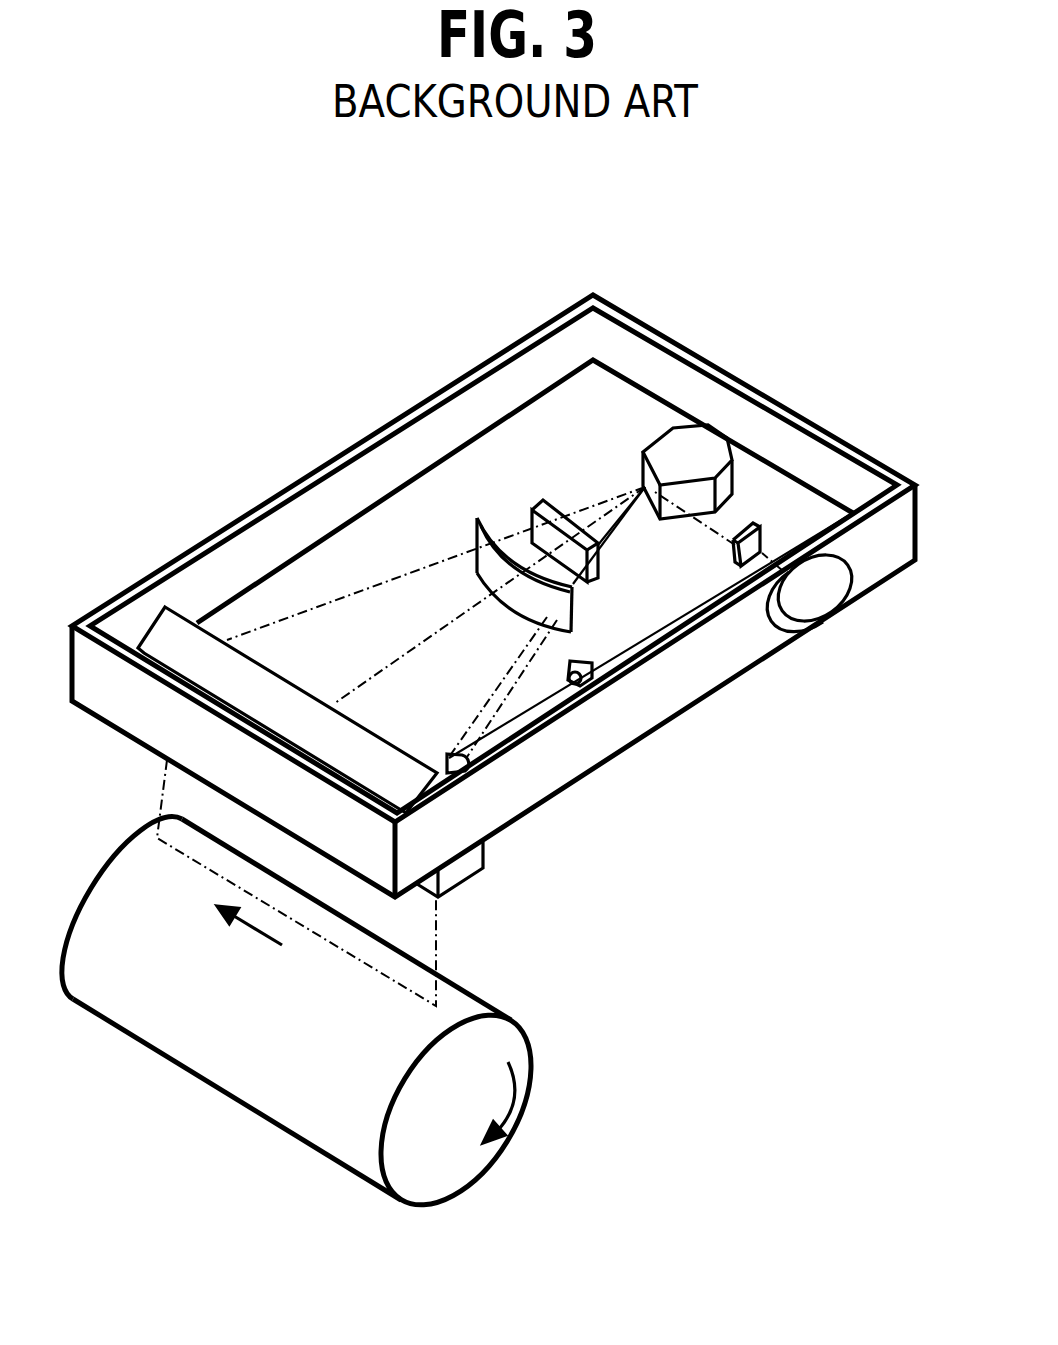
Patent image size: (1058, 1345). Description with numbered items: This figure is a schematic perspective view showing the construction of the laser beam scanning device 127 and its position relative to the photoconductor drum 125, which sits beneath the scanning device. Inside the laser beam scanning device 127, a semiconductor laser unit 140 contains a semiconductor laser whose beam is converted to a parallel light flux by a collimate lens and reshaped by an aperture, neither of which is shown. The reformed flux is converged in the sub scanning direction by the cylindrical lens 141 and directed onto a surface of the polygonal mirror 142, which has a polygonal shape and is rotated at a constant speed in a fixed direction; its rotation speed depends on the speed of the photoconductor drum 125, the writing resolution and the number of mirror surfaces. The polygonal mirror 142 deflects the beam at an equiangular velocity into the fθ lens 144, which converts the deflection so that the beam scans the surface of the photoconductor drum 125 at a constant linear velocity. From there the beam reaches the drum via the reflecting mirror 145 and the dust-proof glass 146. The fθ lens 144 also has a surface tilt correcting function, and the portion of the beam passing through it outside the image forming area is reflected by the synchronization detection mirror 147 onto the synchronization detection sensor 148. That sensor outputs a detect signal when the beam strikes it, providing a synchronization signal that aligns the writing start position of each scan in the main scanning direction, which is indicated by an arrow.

The photoconductor drum 125 is at (531, 1050).
The laser beam scanning device 127 is at (260, 507).
The semiconductor laser unit 140 is at (820, 600).
The cylindrical lens 141 is at (762, 525).
The polygonal mirror 142 is at (722, 432).
The fθ lens 144 is at (530, 517).
The reflecting mirror 145 is at (148, 628).
The dust-proof glass 146 is at (466, 881).
The synchronization detection mirror 147 is at (472, 778).
The synchronization detection sensor 148 is at (596, 670).